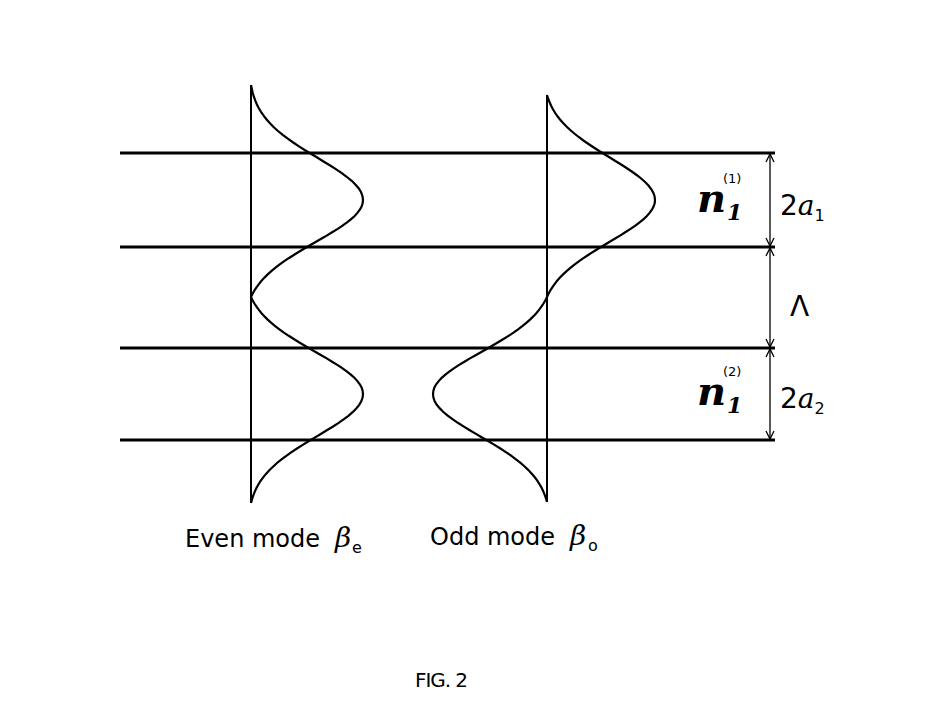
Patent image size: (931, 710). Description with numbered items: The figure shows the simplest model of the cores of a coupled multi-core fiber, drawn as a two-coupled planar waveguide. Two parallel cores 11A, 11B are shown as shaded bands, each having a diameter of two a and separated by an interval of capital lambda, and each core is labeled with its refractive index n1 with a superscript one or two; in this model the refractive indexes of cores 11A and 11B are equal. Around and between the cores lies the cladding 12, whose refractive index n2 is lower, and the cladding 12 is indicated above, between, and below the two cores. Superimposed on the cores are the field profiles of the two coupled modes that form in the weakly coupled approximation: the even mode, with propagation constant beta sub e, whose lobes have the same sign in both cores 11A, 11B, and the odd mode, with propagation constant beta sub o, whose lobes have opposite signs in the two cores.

The core 11A is at (135, 176).
The core 11B is at (134, 377).
The cladding 12 is at (620, 326).